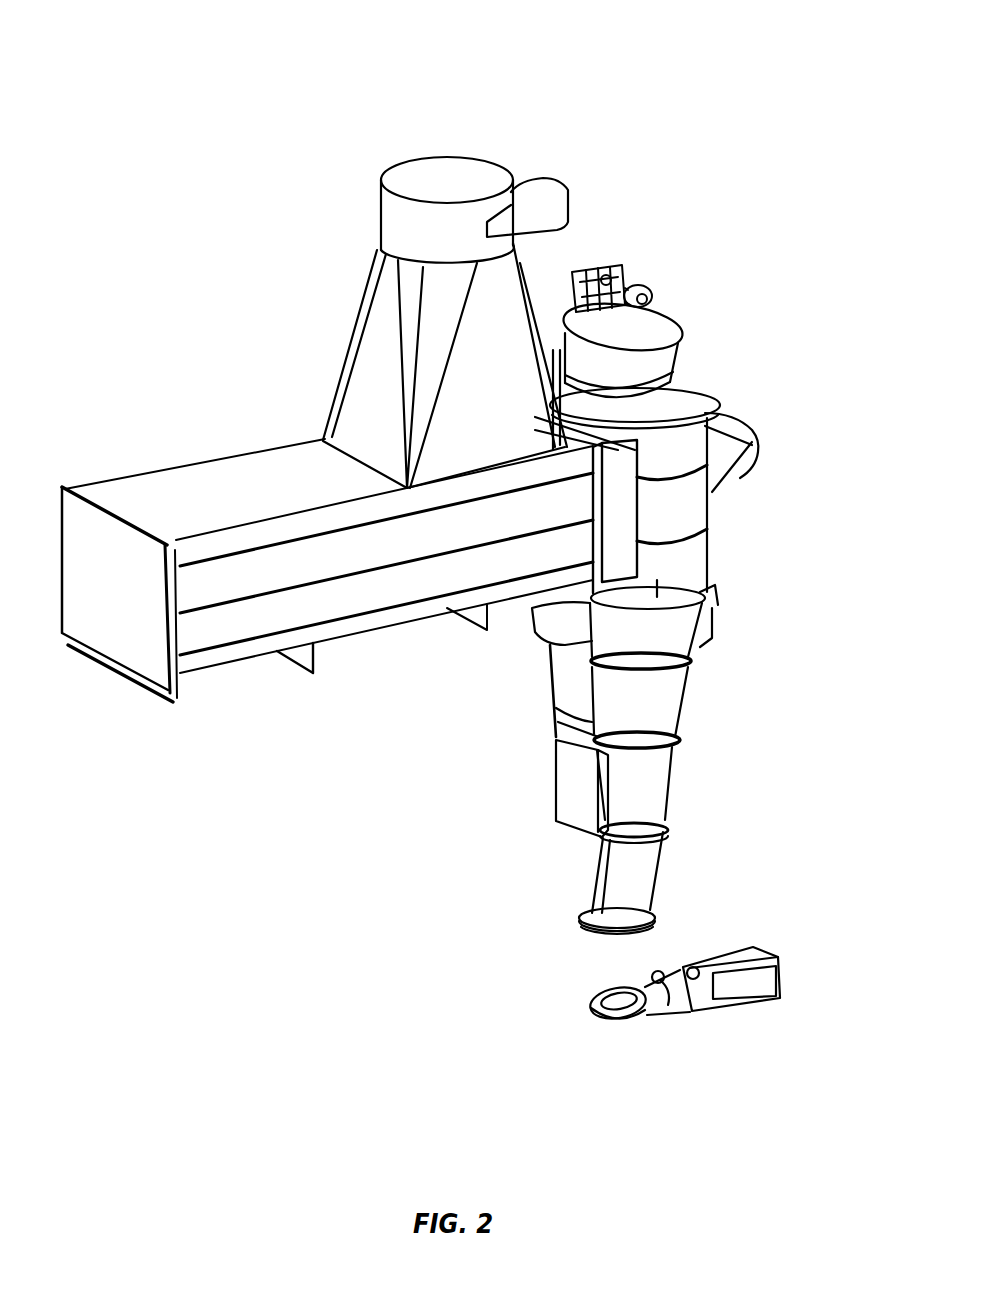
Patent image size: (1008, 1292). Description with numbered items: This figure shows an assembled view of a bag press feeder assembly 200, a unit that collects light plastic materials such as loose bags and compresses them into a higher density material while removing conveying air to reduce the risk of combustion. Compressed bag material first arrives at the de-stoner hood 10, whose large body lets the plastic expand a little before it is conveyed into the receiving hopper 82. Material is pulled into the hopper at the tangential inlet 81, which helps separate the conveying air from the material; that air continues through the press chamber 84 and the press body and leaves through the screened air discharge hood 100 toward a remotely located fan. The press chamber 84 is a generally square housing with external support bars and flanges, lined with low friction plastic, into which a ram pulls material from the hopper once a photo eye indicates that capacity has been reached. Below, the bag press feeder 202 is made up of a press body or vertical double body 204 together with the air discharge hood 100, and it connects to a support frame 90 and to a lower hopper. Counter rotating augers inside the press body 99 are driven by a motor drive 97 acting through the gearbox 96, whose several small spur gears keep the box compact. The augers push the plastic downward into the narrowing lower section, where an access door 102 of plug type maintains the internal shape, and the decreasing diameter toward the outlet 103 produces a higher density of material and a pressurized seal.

The bag press feeder assembly 200 is at (412, 100).
The receiving hopper 82 is at (400, 211).
The inlet 81 is at (568, 192).
The de-stoner hood 10 is at (365, 321).
The press chamber 84 is at (277, 473).
The support frame 90 is at (307, 673).
The motor drive 97 is at (628, 282).
The gearbox 96 is at (667, 363).
The air discharge hood 100 is at (727, 458).
The press body 99 is at (680, 632).
The bag press feeder 202 is at (650, 700).
The press body or vertical double body 204 is at (630, 773).
The access door 102 is at (578, 780).
The outlet 103 is at (607, 903).